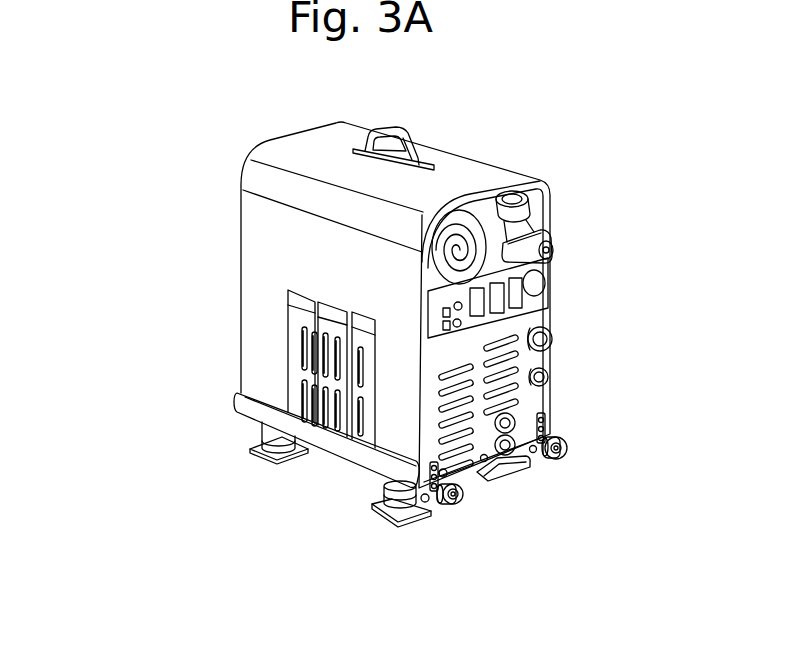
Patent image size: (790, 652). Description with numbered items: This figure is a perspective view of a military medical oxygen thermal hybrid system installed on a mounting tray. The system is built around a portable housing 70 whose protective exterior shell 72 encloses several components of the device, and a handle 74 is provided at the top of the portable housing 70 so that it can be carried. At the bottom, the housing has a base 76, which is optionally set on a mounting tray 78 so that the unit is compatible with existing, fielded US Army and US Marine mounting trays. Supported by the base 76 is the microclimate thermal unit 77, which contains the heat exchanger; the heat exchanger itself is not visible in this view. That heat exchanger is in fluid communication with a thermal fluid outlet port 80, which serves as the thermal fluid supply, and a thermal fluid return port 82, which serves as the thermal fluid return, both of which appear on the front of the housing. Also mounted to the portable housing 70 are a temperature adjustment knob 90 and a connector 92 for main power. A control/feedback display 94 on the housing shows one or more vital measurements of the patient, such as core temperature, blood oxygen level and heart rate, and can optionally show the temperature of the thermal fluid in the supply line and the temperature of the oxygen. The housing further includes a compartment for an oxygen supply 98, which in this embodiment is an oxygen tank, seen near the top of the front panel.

The portable housing 70 is at (158, 125).
The protective exterior shell 72 is at (253, 233).
The handle 74 is at (405, 135).
The base 76 is at (463, 472).
The microclimate thermal unit 77 is at (298, 372).
The mounting tray 78 is at (256, 428).
The thermal fluid outlet port 80 is at (515, 422).
The thermal fluid return port 82 is at (522, 451).
The temperature adjustment knob 90 is at (585, 377).
The connector 92 is at (585, 337).
The control/feedback display 94 is at (548, 302).
The oxygen supply 98 is at (560, 252).